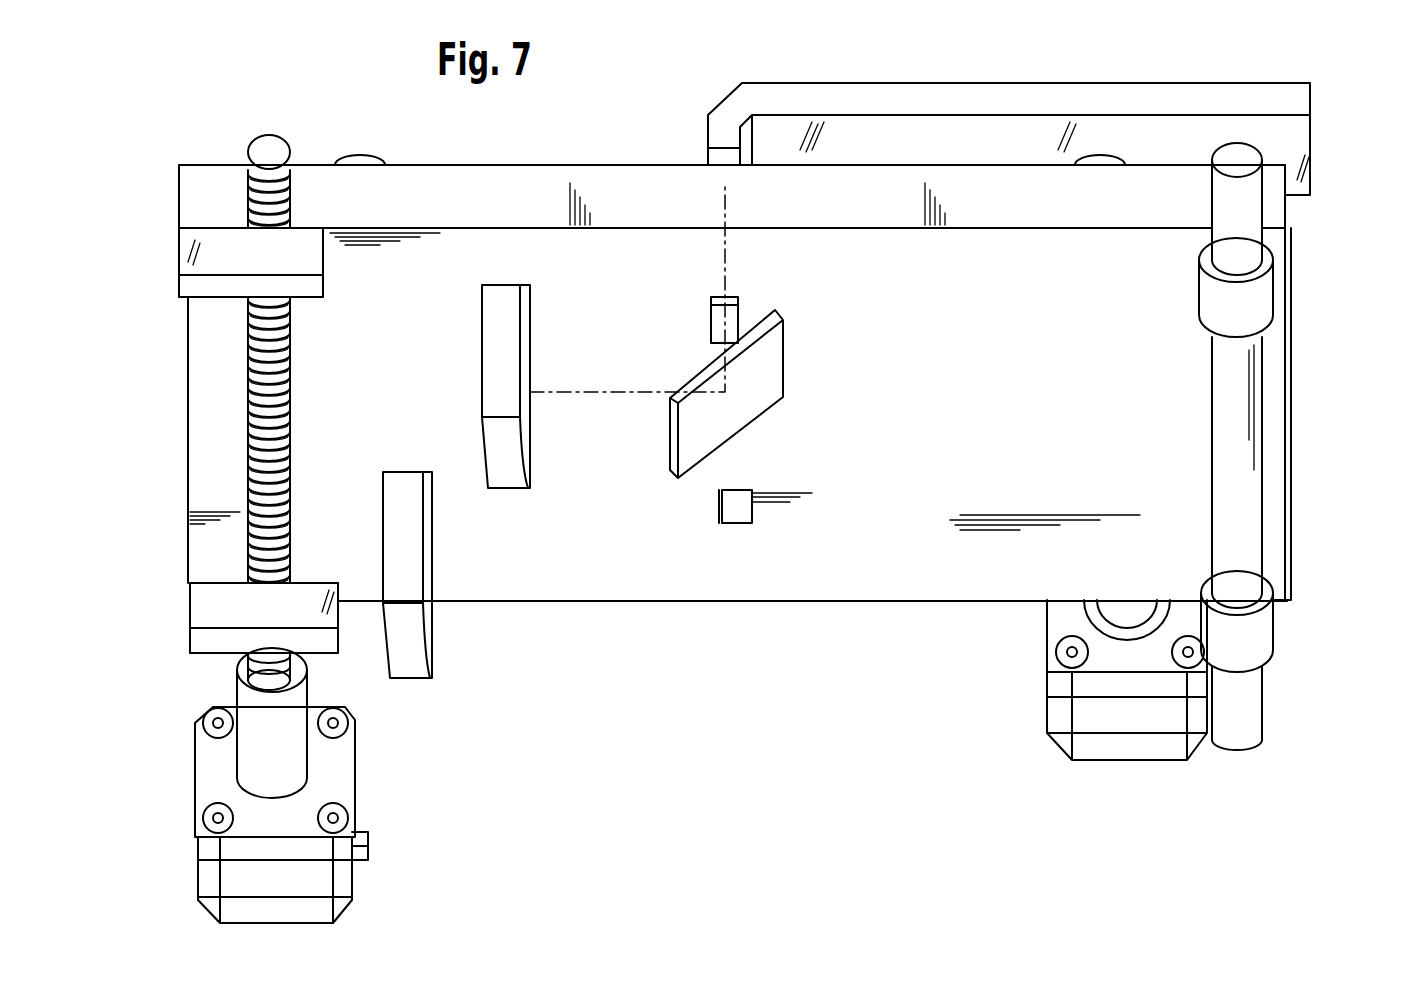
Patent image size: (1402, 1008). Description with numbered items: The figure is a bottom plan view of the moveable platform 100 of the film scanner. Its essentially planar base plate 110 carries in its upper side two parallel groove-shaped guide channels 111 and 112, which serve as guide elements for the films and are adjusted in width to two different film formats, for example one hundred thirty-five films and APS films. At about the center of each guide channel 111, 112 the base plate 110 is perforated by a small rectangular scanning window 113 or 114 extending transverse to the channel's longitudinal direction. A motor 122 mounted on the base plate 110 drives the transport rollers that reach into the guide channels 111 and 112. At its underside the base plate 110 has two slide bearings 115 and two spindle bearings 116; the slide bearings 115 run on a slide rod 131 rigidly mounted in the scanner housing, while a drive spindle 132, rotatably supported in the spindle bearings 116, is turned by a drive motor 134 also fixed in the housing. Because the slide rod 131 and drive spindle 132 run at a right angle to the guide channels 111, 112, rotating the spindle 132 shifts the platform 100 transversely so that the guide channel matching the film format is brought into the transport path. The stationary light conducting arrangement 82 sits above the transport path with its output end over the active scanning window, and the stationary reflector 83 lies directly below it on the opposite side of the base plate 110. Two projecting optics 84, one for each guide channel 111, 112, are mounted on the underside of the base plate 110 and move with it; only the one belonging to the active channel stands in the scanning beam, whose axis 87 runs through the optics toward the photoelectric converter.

The moveable platform 100 is at (799, 648).
The light conducting arrangement 82 is at (730, 117).
The reflector 83 is at (770, 368).
The projecting optics 84 is at (502, 362).
The optical axis 87 is at (598, 392).
The base plate 110 is at (215, 422).
The guide channel 111 is at (1290, 307).
The guide channel 112 is at (1291, 447).
The scanning window 113 is at (718, 325).
The scanning window 114 is at (737, 503).
The slide bearing 115 is at (1215, 298).
The spindle bearing 116 is at (192, 250).
The motor 122 is at (1090, 700).
The slide rod 131 is at (1227, 437).
The drive spindle 132 is at (300, 402).
The drive motor 134 is at (338, 778).